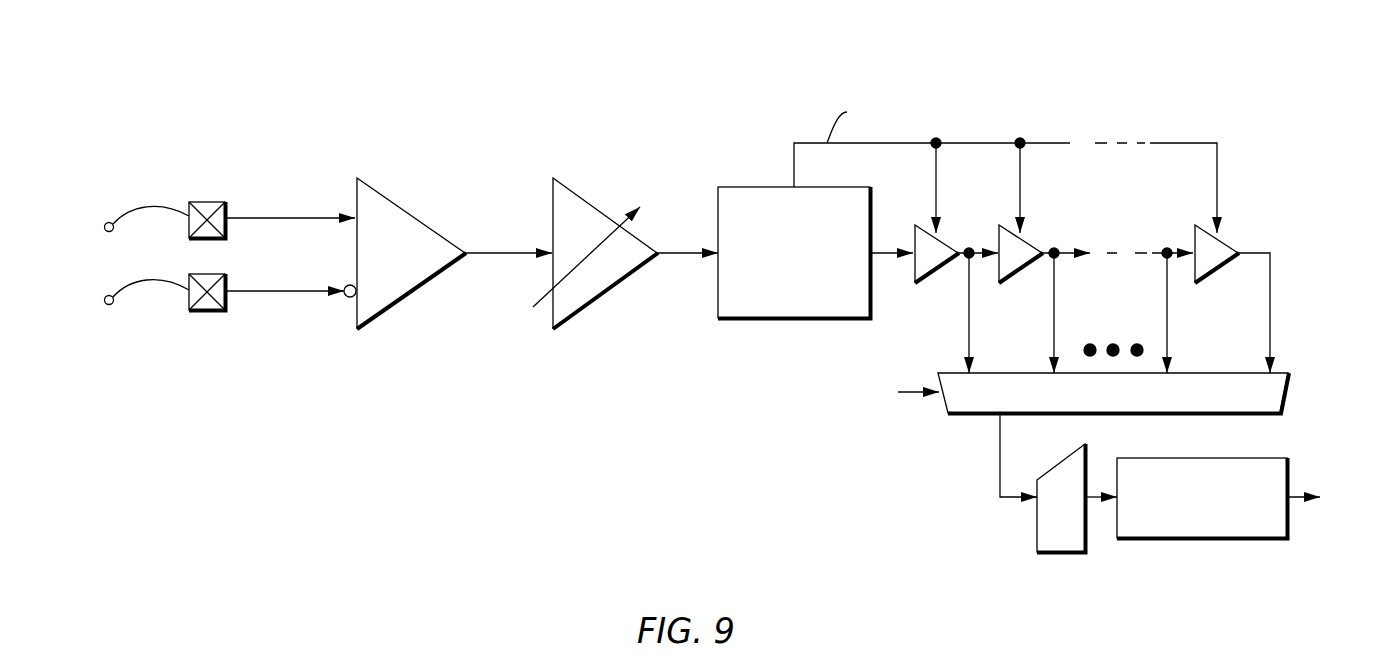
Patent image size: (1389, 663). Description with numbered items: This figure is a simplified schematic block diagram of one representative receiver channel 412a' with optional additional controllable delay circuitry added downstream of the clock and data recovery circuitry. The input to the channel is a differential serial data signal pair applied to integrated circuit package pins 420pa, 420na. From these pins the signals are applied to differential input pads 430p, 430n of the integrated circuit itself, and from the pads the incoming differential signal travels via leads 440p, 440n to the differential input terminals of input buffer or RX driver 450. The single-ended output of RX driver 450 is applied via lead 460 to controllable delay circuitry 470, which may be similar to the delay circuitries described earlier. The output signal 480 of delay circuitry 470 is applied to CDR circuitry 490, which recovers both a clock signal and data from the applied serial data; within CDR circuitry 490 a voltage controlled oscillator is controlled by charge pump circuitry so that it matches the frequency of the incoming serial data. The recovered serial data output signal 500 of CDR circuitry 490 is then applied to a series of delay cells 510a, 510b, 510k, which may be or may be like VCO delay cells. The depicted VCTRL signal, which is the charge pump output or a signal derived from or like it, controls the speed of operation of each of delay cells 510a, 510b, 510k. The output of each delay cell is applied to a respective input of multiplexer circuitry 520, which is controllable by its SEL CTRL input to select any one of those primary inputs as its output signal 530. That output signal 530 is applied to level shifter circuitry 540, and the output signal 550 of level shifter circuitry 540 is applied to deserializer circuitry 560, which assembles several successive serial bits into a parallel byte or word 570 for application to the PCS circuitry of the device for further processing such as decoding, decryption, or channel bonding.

The representative receiver channel 412a' is at (279, 50).
The integrated circuit package pin 420pa is at (112, 222).
The integrated circuit package pin 420na is at (110, 295).
The differential input pad 430p is at (203, 202).
The differential input pad 430n is at (202, 311).
The lead 440p is at (265, 218).
The lead 440n is at (268, 292).
The input buffer or RX driver 450 is at (417, 217).
The lead 460 is at (500, 254).
The controllable delay circuitry 470 is at (585, 200).
The output signal of delay circuitry 480 is at (673, 254).
The clock and data recovery circuitry 490 is at (738, 187).
The serial data output signal 500 is at (887, 254).
The delay cell 510a is at (942, 240).
The delay cell 510b is at (1027, 238).
The delay cell 510k is at (1223, 238).
The multiplexer circuitry 520 is at (1287, 392).
The multiplexer output signal 530 is at (1000, 458).
The level shifter circuitry 540 is at (1040, 553).
The level shifter output signal 550 is at (1093, 498).
The deserializer circuitry 560 is at (1183, 539).
The parallel byte or word 570 is at (1295, 498).